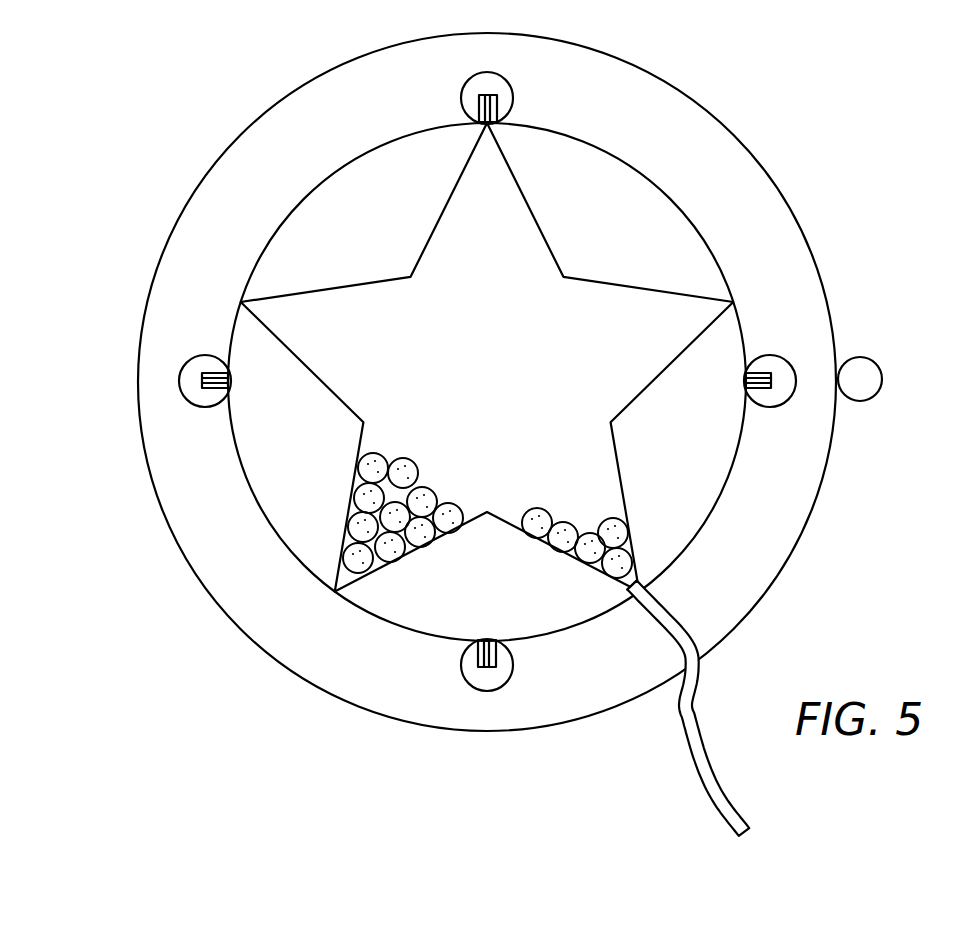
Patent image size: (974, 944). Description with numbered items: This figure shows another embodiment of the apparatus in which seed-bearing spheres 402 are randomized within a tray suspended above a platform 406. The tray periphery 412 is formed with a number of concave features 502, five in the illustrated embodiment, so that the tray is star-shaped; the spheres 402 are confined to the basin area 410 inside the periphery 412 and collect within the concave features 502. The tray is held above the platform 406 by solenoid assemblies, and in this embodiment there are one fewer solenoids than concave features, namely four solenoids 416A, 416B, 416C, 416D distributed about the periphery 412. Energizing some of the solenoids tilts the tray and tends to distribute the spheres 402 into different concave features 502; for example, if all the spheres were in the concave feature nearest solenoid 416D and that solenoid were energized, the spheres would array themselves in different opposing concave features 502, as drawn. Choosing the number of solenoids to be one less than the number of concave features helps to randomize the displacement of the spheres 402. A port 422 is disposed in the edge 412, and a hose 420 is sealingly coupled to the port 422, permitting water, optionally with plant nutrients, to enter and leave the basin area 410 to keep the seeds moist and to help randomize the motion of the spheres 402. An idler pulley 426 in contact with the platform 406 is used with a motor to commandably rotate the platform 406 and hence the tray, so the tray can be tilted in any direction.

The spheres 402 is at (342, 553).
The platform 406 is at (663, 75).
The basin area 410 is at (487, 358).
The tray periphery 412 is at (542, 233).
The solenoid 416A is at (487, 691).
The solenoid 416B is at (187, 405).
The solenoid 416C is at (778, 357).
The solenoid 416D is at (513, 84).
The hose 420 is at (713, 792).
The port 422 is at (662, 600).
The idler pulley 426 is at (865, 357).
The concave features 502 is at (320, 340).